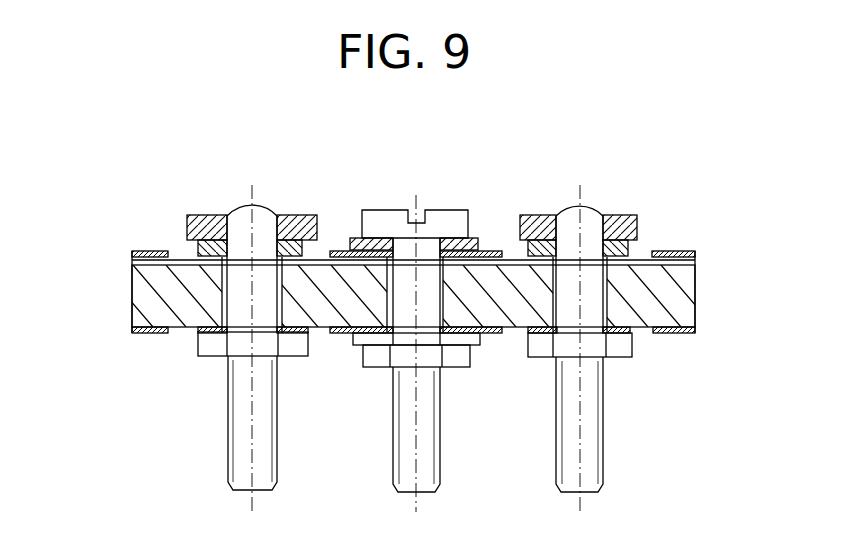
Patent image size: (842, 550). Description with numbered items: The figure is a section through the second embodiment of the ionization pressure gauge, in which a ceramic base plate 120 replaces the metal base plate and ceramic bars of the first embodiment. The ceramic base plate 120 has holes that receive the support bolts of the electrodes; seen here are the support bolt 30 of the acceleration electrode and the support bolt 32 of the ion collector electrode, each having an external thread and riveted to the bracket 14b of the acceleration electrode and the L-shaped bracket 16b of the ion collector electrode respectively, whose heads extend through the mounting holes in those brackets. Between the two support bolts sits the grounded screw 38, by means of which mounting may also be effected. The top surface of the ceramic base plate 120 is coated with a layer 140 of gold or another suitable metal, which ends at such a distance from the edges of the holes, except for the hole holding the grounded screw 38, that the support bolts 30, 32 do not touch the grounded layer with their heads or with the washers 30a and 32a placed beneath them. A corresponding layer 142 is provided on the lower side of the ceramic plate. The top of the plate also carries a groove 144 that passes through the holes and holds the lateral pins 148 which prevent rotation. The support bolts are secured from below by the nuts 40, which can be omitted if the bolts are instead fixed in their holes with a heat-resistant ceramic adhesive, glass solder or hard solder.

The ceramic base plate 120 is at (157, 308).
The groove 144 is at (137, 259).
The layer of gold or other suitable metal 140 is at (683, 252).
The layer on the lower side of the ceramic plate 142 is at (678, 335).
The lateral pins 148 is at (295, 215).
The angled support part or bracket 14b is at (200, 215).
The L-shaped support part or bracket 16b is at (538, 215).
The support bolt 30 is at (184, 348).
The washer 30a is at (202, 252).
The support bolt 32 is at (560, 337).
The washer 32a is at (535, 207).
The grounded screw 38 is at (388, 219).
The nuts 40 is at (575, 348).